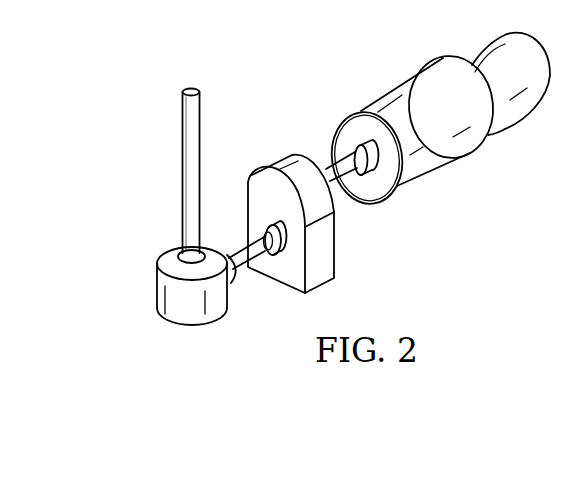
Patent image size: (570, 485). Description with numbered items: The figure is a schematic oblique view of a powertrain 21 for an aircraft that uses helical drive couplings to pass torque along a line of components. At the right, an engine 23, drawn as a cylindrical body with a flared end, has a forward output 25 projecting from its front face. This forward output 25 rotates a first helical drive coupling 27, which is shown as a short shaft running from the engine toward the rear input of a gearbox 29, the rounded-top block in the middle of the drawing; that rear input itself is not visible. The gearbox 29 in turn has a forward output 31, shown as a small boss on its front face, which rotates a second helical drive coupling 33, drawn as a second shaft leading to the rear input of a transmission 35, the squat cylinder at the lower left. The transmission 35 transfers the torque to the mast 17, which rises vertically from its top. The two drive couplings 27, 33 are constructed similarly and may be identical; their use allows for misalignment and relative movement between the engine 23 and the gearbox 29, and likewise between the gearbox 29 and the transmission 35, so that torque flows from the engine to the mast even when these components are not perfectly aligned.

The mast 17 is at (183, 148).
The powertrain 21 is at (262, 57).
The engine 23 is at (428, 174).
The forward output 25 is at (338, 129).
The first helical drive coupling 27 is at (343, 191).
The gearbox 29 is at (320, 277).
The forward output 31 is at (282, 258).
The second helical drive coupling 33 is at (234, 245).
The transmission 35 is at (158, 283).